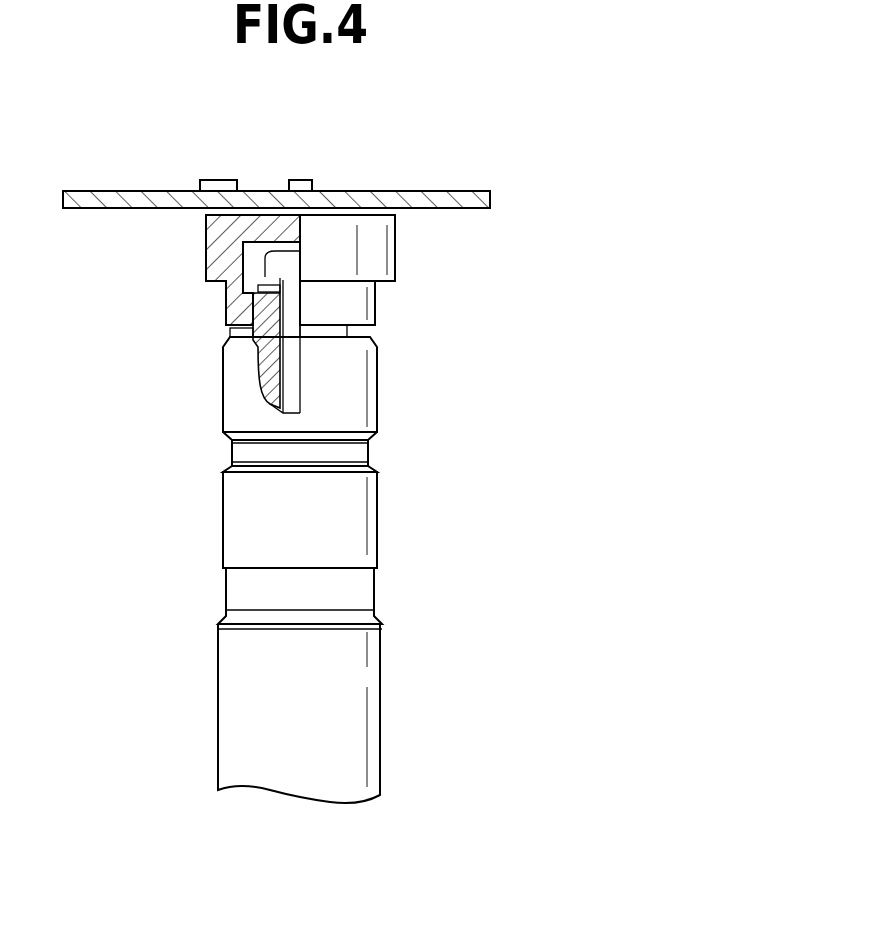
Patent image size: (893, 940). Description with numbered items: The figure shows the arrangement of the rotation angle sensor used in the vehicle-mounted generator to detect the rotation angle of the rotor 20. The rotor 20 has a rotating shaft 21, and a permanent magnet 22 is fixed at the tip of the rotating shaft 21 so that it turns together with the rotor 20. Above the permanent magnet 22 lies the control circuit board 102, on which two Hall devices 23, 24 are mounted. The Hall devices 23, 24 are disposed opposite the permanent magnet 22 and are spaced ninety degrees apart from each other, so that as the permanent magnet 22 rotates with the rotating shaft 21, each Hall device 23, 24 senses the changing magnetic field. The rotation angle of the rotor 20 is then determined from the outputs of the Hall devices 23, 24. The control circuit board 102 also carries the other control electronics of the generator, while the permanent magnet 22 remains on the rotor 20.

The control circuit board 102 is at (433, 192).
The Hall device 23 is at (217, 179).
The Hall device 24 is at (301, 179).
The permanent magnet 22 is at (223, 233).
The rotor 20 is at (384, 370).
The rotating shaft 21 is at (368, 675).